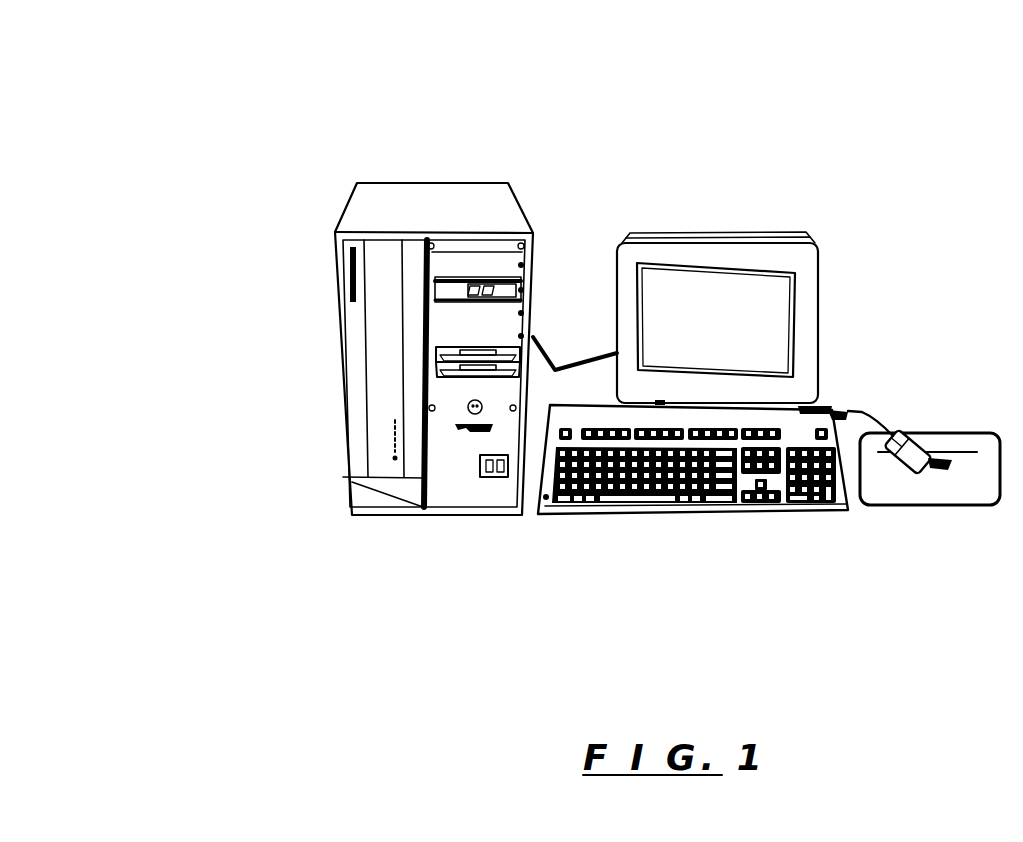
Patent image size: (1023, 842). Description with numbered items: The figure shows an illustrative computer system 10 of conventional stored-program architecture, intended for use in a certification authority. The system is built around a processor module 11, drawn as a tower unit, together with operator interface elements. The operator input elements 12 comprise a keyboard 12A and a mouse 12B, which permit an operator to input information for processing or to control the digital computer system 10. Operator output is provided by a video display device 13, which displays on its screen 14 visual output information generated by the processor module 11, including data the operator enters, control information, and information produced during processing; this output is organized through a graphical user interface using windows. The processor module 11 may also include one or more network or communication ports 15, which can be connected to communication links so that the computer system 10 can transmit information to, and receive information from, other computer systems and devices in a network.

The computer system 10 is at (276, 108).
The processor module 11 is at (440, 182).
The operator input elements 12 is at (842, 562).
The keyboard 12A is at (728, 518).
The mouse 12B is at (984, 510).
The video display device 13 is at (826, 323).
The screen 14 is at (653, 297).
The network or communication ports 15 is at (338, 362).